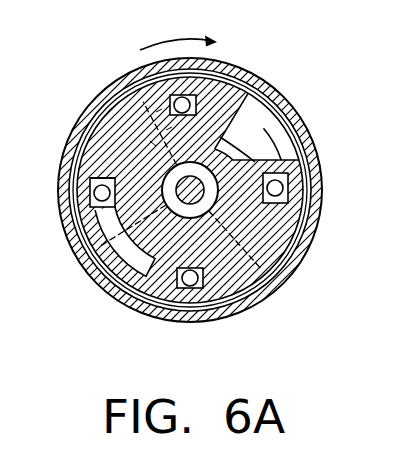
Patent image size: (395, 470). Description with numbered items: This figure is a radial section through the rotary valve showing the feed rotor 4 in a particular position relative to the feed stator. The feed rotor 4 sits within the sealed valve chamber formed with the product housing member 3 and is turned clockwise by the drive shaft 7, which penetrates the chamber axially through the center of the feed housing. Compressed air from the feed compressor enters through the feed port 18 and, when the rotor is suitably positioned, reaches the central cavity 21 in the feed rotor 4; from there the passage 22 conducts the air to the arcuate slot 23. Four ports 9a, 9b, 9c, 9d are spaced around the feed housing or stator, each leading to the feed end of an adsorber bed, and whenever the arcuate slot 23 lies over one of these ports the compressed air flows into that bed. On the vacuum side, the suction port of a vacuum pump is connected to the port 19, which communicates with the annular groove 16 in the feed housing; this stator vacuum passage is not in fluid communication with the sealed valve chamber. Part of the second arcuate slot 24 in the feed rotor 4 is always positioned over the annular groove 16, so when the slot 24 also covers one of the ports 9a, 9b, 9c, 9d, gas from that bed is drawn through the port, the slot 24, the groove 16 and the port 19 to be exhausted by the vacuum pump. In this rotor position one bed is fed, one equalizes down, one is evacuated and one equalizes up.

The product housing member 3 is at (268, 88).
The feed rotor 4 is at (236, 76).
The arcuate slot 24 is at (305, 150).
The feed port 18 is at (288, 281).
The drive shaft 7 is at (280, 287).
The annular groove 16 is at (281, 104).
The arcuate slot 23 is at (93, 274).
The vacuum port 19 is at (137, 165).
The central cavity 21 is at (180, 147).
The passage 22 is at (100, 180).
The port 9a is at (290, 190).
The port 9b is at (162, 315).
The port 9c is at (62, 200).
The port 9d is at (186, 162).